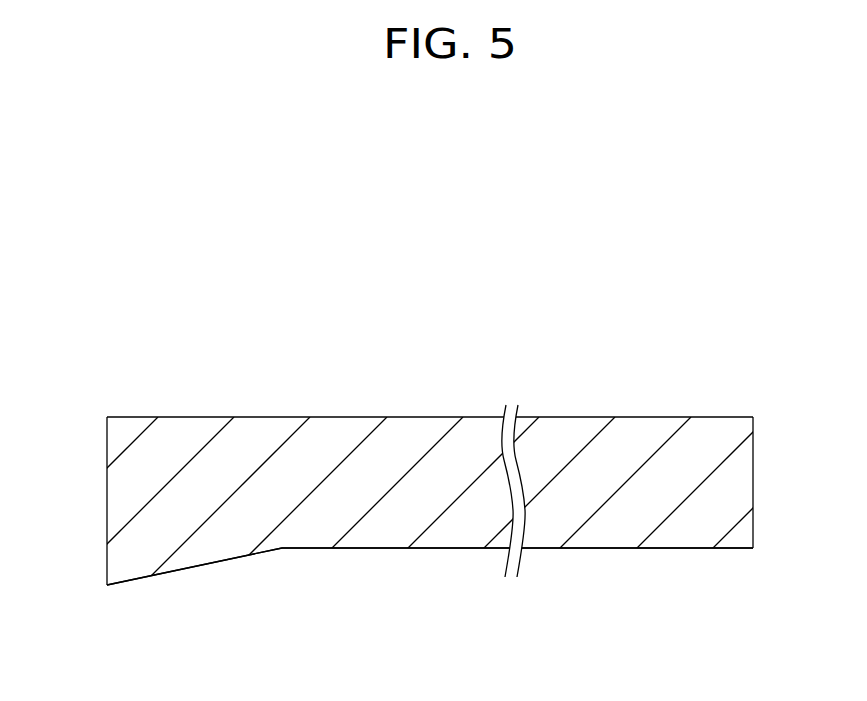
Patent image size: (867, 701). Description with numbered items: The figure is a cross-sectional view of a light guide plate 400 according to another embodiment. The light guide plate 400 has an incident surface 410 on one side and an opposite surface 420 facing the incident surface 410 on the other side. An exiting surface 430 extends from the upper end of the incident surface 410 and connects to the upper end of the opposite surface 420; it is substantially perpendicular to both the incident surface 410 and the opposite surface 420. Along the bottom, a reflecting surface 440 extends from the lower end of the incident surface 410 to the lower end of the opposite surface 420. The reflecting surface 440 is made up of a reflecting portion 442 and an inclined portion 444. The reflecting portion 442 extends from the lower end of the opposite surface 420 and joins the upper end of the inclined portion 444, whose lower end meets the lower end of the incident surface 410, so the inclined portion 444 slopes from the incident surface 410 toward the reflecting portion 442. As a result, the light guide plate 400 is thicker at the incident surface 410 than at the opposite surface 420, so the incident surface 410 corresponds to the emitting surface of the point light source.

The light guide plate 400 is at (434, 286).
The incident surface 410 is at (107, 500).
The opposite surface 420 is at (753, 481).
The exiting surface 430 is at (360, 417).
The reflecting surface 440 is at (364, 633).
The reflecting portion 442 is at (343, 550).
The inclined portion 444 is at (217, 563).